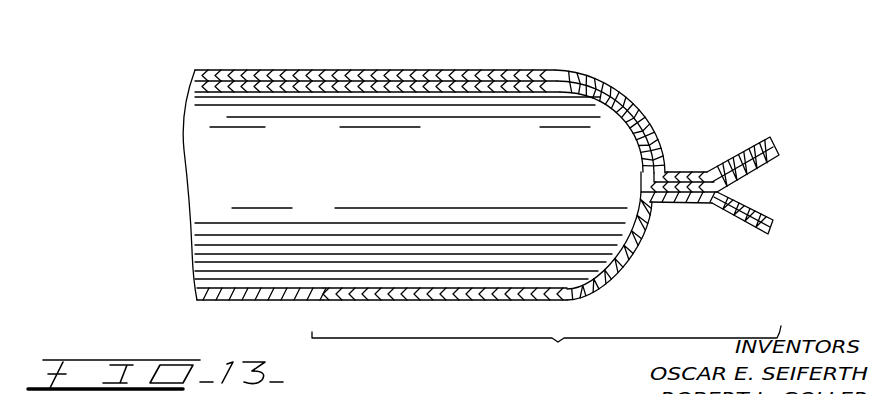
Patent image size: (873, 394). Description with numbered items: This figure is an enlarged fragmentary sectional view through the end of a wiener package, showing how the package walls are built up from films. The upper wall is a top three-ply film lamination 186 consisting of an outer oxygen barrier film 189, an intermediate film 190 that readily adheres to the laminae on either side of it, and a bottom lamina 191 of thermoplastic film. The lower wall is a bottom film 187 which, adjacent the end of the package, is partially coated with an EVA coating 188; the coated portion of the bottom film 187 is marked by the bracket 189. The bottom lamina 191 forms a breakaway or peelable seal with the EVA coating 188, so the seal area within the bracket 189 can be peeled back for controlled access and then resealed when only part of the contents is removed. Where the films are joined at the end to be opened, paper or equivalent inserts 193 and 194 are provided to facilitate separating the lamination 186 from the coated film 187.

The top three-ply film lamination 186 is at (566, 71).
The bottom film 187 is at (305, 299).
The EVA coating 188 is at (492, 287).
The bracket 189 is at (387, 74).
The intermediate film 190 is at (293, 82).
The bottom lamina 191 is at (228, 88).
The paper insert 193 is at (765, 166).
The paper insert 194 is at (762, 209).